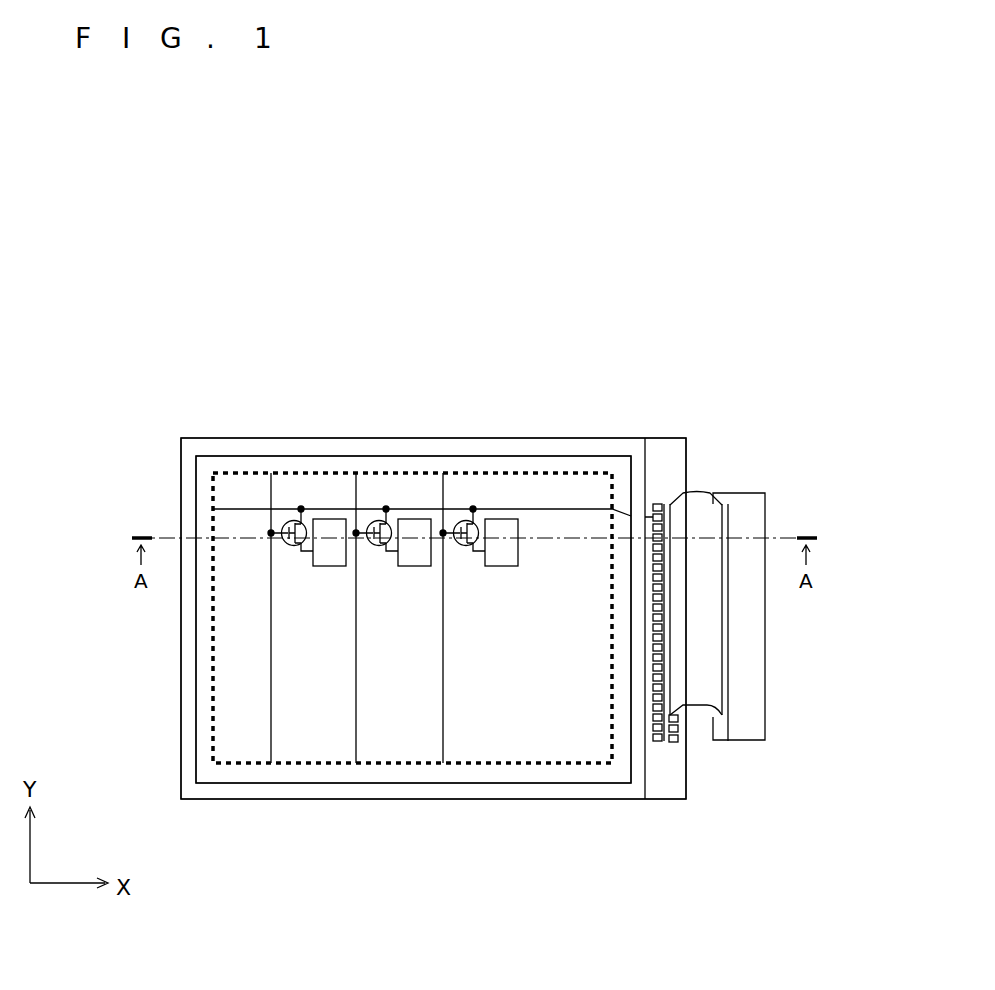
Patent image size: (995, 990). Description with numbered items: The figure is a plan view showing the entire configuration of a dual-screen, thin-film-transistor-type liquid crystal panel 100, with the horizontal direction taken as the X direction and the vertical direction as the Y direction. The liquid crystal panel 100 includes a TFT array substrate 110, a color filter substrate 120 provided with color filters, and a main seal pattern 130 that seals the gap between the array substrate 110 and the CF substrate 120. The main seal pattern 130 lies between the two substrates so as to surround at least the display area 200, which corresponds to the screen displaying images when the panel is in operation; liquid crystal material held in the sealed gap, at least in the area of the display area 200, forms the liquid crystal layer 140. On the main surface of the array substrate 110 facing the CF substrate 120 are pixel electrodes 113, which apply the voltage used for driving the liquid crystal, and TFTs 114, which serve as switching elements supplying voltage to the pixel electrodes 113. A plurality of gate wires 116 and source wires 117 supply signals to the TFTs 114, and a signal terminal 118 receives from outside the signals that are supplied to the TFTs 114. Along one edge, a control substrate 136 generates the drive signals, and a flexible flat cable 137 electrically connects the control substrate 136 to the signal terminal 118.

The liquid crystal panel 100 is at (601, 281).
The TFT array substrate 110 is at (686, 752).
The color filter substrate 120 is at (645, 775).
The main seal pattern 130 is at (200, 438).
The liquid crystal layer 140 is at (522, 742).
The display area 200 is at (213, 725).
The gate wires 116 is at (271, 642).
The source wires 117 is at (237, 509).
The TFTs 114 is at (378, 511).
The pixel electrodes 113 is at (418, 519).
The signal terminal 118 is at (660, 505).
The flexible flat cable 137 is at (698, 507).
The control substrate 136 is at (745, 510).